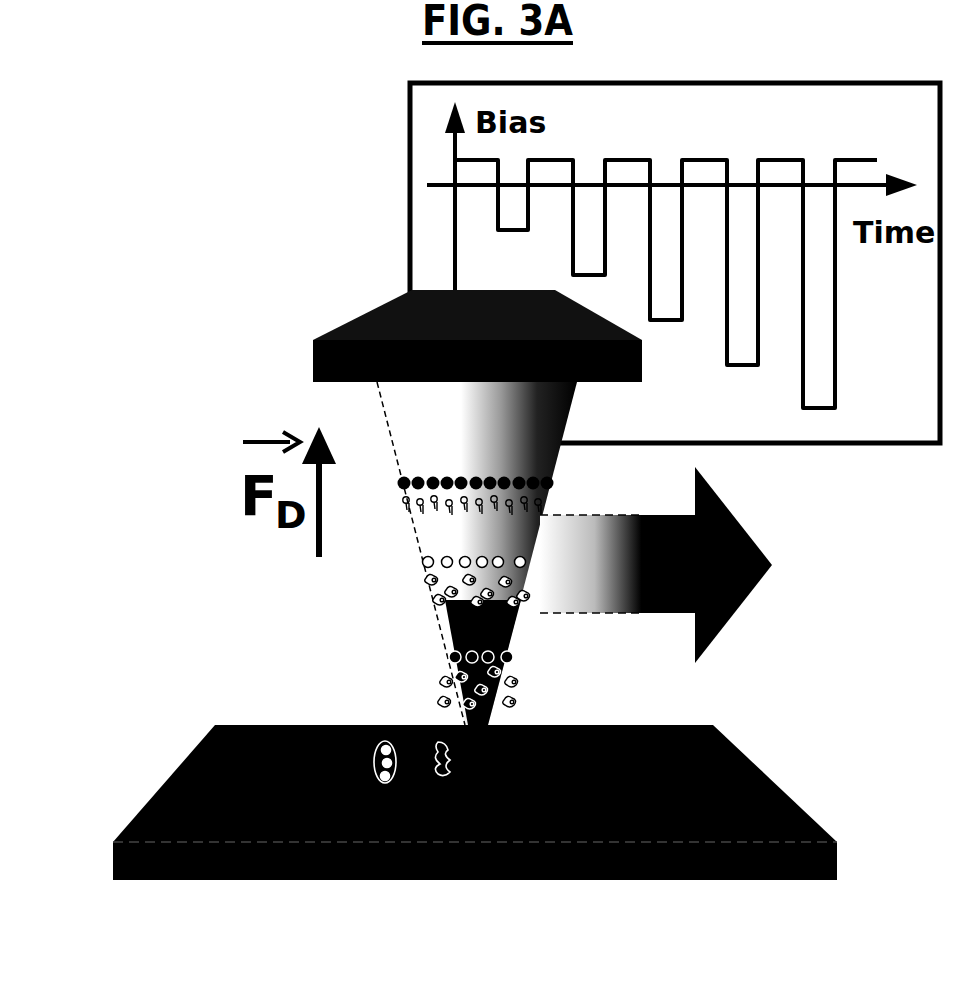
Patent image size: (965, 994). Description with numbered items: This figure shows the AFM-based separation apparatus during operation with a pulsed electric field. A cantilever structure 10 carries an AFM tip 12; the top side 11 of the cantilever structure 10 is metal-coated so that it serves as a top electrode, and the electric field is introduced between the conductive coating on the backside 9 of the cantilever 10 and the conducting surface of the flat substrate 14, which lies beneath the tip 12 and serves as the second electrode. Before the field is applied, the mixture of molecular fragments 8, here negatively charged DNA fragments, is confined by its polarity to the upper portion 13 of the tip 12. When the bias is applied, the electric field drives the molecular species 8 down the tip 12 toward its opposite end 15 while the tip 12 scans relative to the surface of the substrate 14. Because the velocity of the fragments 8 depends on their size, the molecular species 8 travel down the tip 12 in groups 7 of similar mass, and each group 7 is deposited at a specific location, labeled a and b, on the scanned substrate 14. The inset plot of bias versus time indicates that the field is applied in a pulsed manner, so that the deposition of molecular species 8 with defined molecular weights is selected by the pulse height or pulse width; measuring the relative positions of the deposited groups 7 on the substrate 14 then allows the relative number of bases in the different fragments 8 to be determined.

The groups of molecular species 7 is at (447, 658).
The molecular fragments 8 is at (513, 500).
The backside of the cantilever 9 is at (623, 382).
The cantilever structure 10 is at (397, 302).
The top side of the cantilever structure 11 is at (378, 325).
The AFM tip 12 is at (410, 546).
The upper portion of the tip 13 is at (412, 415).
The substrate 14 is at (748, 782).
The opposite end of the tip 15 is at (455, 625).